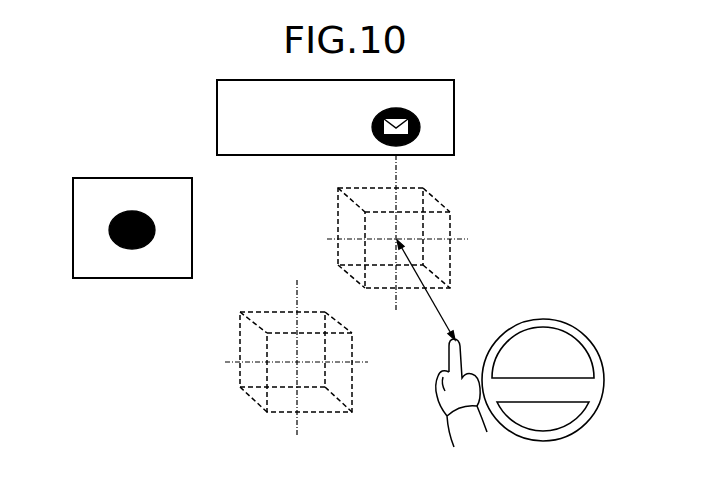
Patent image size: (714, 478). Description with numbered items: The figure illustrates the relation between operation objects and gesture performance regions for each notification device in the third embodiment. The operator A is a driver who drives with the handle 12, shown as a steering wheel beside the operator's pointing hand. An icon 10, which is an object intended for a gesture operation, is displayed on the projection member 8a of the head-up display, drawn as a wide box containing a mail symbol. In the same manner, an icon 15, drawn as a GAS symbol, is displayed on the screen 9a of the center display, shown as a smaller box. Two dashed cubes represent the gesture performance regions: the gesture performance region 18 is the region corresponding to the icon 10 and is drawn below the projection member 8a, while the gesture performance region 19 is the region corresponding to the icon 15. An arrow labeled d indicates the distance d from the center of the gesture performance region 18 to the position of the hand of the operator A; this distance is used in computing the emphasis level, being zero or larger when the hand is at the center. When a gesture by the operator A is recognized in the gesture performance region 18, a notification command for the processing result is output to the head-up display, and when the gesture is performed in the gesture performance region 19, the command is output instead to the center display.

The projection member 8a is at (217, 110).
The screen 9a is at (73, 204).
The icon 10 is at (421, 125).
The icon 15 is at (155, 229).
The gesture performance region 18 is at (451, 216).
The gesture performance region 19 is at (240, 340).
The handle 12 is at (604, 365).
The operator A is at (440, 408).
The distance d is at (426, 290).